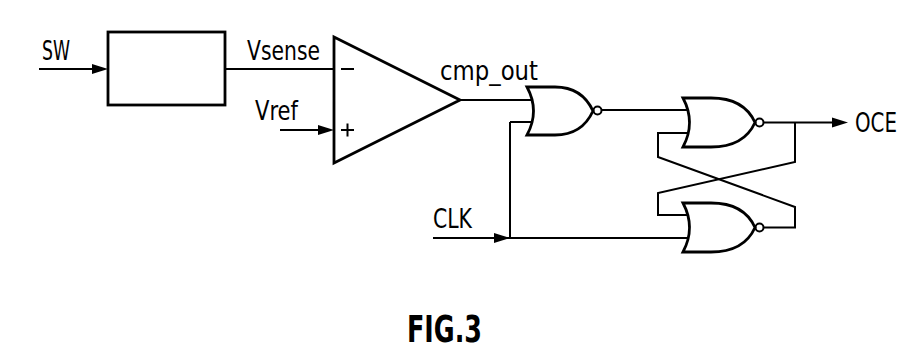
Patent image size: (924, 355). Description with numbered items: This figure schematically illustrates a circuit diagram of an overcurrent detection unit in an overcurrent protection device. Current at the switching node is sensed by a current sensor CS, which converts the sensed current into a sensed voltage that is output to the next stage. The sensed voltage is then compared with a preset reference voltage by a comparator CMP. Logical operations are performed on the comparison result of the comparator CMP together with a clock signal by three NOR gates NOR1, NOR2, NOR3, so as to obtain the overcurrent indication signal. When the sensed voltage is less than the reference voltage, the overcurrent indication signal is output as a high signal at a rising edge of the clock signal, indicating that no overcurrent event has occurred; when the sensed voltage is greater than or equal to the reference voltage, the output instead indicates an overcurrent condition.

The current sensor CS is at (166, 68).
The comparator CMP is at (397, 100).
The NOR gate NOR1 is at (556, 111).
The NOR gate NOR2 is at (723, 122).
The NOR gate NOR3 is at (723, 227).